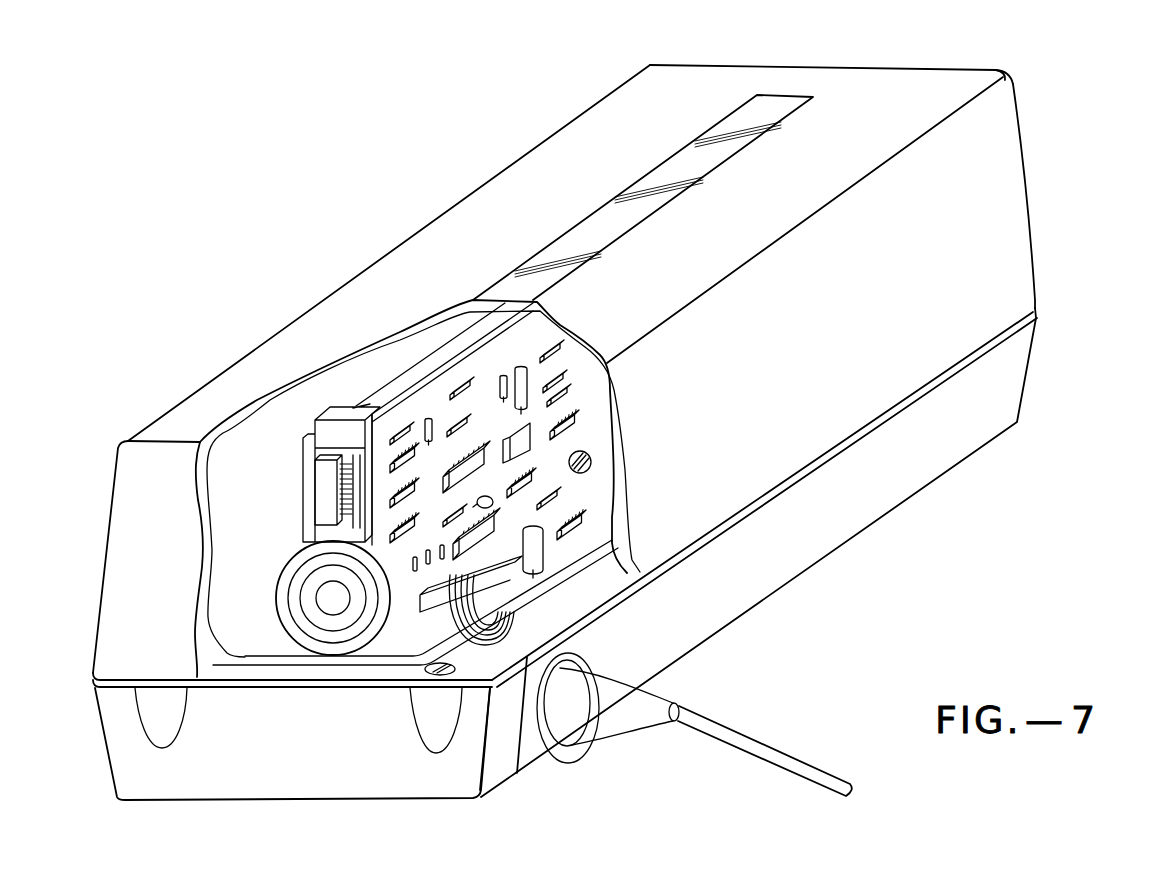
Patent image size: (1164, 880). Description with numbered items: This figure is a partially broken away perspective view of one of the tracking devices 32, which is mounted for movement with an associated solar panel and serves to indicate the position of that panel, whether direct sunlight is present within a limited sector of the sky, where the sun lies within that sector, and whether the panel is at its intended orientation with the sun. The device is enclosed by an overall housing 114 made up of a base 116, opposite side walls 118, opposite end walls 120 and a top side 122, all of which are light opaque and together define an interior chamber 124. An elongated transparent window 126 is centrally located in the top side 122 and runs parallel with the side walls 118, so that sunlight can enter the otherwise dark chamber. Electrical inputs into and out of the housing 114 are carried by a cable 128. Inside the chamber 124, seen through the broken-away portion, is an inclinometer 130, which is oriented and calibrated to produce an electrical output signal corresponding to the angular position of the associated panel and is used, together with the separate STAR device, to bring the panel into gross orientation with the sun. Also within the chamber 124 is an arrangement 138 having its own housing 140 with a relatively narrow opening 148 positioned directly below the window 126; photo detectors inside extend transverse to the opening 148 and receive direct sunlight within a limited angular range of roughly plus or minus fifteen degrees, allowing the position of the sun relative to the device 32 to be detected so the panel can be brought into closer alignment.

The device 32 is at (1063, 124).
The housing 114 is at (975, 67).
The base 116 is at (886, 498).
The side walls 118 is at (790, 383).
The end walls 120 is at (763, 67).
The top side 122 is at (614, 98).
The interior chamber 124 is at (263, 477).
The transparent window 126 is at (693, 148).
The cable 128 is at (780, 745).
The inclinometer 130 is at (323, 635).
The arrangement 138 is at (330, 408).
The housing 140 is at (362, 392).
The opening 148 is at (453, 340).